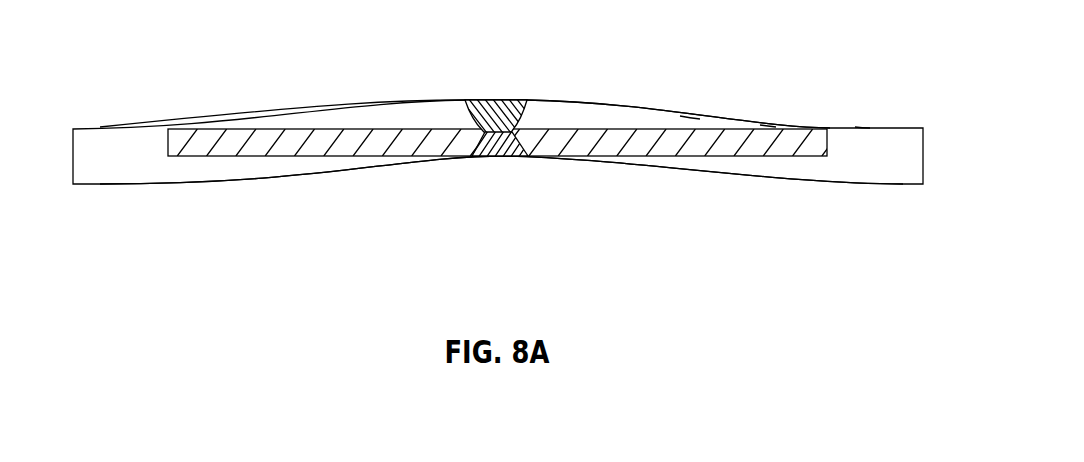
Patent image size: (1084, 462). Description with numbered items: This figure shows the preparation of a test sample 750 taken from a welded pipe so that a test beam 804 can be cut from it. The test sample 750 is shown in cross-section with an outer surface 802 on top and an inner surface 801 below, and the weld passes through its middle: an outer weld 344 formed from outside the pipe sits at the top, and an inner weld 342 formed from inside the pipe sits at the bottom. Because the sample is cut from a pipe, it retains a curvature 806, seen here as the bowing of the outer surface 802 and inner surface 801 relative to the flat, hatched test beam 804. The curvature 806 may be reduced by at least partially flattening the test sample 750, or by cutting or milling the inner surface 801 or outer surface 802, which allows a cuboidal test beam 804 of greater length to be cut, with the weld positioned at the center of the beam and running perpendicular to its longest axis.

The test sample 750 is at (150, 128).
The outer surface 802 is at (373, 108).
The inner surface 801 is at (353, 167).
The test beam 804 is at (333, 157).
The outer weld 344 is at (495, 98).
The inner weld 342 is at (500, 157).
The curvature 806 is at (687, 115).